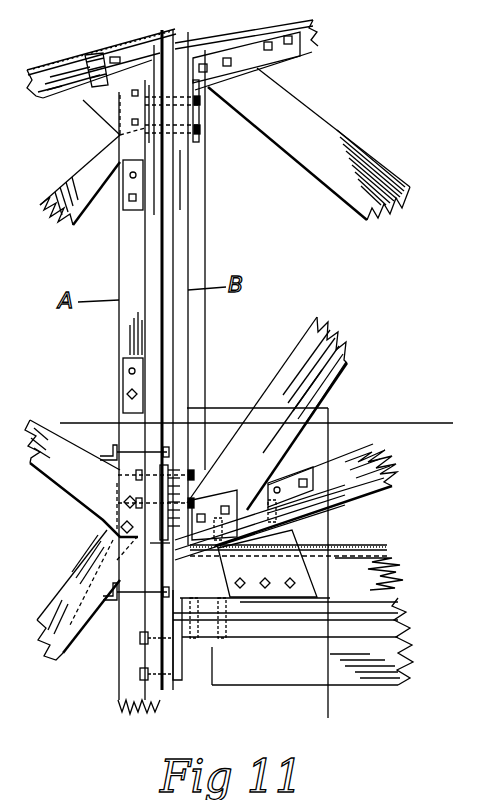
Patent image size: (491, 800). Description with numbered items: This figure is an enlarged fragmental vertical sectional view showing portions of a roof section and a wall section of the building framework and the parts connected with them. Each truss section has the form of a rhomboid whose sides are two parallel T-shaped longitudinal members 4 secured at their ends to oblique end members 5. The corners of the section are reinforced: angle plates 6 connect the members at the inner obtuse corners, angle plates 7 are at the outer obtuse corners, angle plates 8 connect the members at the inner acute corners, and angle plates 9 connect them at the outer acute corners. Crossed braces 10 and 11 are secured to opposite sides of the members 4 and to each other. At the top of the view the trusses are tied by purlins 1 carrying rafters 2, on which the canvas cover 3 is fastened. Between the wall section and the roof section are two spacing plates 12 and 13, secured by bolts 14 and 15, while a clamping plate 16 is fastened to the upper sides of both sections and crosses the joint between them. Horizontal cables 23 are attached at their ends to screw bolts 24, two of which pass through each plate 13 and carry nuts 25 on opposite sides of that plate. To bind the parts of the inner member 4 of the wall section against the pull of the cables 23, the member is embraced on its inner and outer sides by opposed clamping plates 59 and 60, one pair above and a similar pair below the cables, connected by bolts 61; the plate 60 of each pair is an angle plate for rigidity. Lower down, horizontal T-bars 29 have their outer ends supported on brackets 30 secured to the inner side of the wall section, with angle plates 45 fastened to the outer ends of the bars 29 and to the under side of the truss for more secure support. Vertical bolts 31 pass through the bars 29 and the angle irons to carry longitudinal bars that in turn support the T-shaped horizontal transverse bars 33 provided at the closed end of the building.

The purlin 1 is at (70, 98).
The rafter 2 is at (53, 96).
The canvas cover 3 is at (62, 62).
The longitudinal member 4 is at (119, 253).
The end member 5 is at (188, 236).
The reinforcing angle plate 6 is at (203, 120).
The reinforcing angle plate 7 is at (180, 157).
The reinforcing angle plate 8 is at (110, 130).
The angle plate 9 is at (119, 102).
The crossed brace 10 is at (366, 356).
The crossed brace 11 is at (335, 122).
The spacing plate 12 is at (322, 725).
The spacing plate 13 is at (262, 470).
The bolt 14 is at (201, 130).
The bolt 15 is at (110, 492).
The clamping plate 16 is at (110, 48).
The horizontal cable 23 is at (380, 544).
The screw bolt 24 is at (232, 560).
The nut 25 is at (167, 548).
The horizontal T-bar 29 is at (400, 570).
The bracket or angle iron 30 is at (183, 655).
The vertical bolt 31 is at (210, 608).
The horizontal transverse bar 33 is at (280, 680).
The angle plate 45 is at (300, 535).
The clamping plate 59 is at (187, 408).
The clamping plate 60 is at (100, 460).
The bolt 61 is at (110, 452).